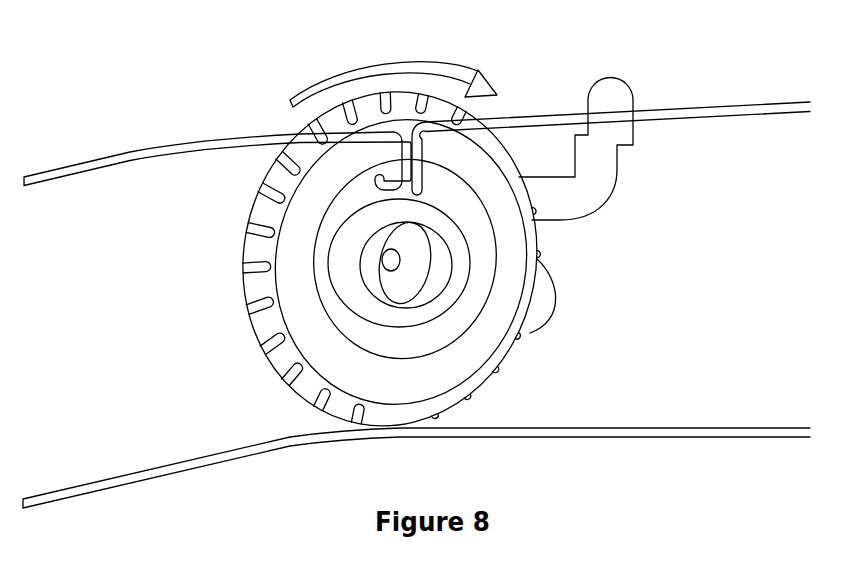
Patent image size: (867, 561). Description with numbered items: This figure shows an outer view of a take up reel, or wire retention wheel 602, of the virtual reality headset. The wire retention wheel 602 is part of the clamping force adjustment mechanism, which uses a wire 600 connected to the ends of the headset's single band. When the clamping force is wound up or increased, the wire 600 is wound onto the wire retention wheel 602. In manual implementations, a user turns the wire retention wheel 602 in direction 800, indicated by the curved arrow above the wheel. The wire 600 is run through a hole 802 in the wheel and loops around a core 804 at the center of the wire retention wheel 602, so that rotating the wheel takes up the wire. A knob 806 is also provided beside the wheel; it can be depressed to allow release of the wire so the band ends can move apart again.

The wire 600 is at (132, 151).
The wire retention wheel 602 is at (330, 178).
The direction 800 is at (406, 60).
The hole 802 is at (380, 197).
The core 804 is at (347, 265).
The knob 806 is at (607, 92).